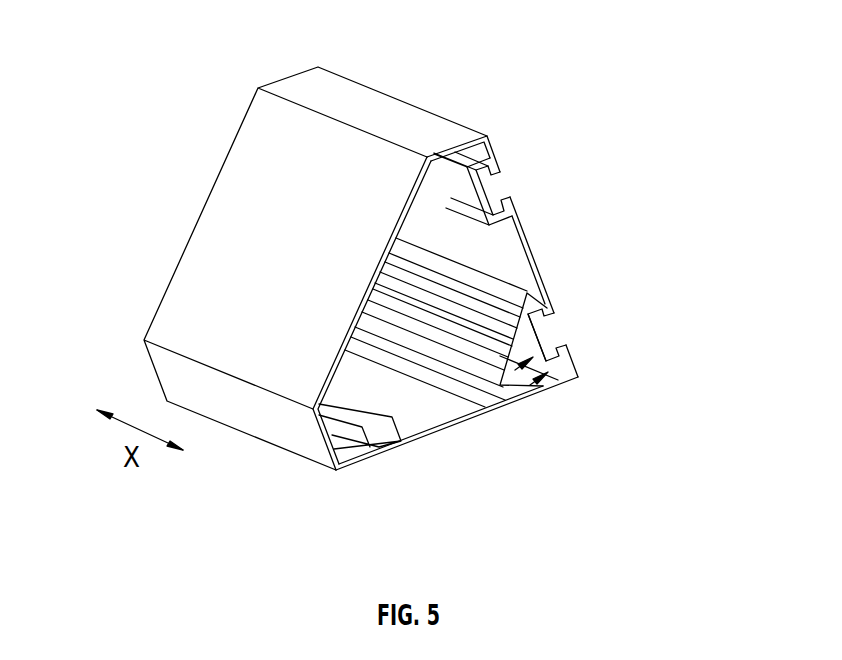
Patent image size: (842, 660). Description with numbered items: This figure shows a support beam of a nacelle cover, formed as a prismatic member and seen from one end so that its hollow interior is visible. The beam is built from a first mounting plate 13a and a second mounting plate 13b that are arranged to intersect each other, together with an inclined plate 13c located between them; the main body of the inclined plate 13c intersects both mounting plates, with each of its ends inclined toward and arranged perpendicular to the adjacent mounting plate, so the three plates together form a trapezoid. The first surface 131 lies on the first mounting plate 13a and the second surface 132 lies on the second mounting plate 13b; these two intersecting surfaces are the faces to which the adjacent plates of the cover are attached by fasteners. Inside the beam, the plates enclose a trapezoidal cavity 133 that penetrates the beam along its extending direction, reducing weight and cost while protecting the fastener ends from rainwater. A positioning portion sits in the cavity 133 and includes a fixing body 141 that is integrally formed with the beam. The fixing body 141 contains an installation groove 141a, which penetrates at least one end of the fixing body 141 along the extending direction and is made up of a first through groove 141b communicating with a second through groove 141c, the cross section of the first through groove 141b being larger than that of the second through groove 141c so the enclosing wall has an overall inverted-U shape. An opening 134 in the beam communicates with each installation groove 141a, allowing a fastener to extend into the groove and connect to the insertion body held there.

The first mounting plate 13a is at (538, 269).
The second mounting plate 13b is at (353, 470).
The inclined plate 13c is at (222, 228).
The first surface 131 is at (530, 242).
The second surface 132 is at (436, 433).
The cavity 133 is at (350, 383).
The opening 134 is at (526, 397).
The fixing body 141 is at (508, 394).
The installation groove 141a is at (692, 318).
The first through groove 141b is at (575, 368).
The second through groove 141c is at (563, 333).